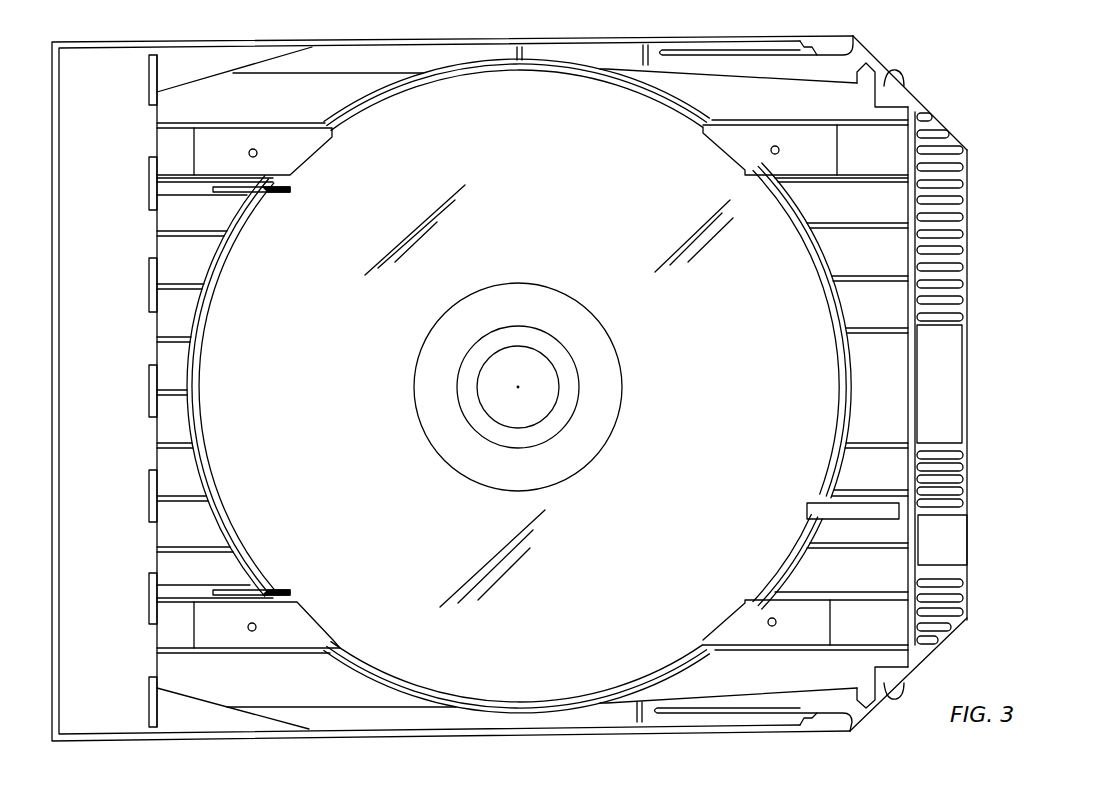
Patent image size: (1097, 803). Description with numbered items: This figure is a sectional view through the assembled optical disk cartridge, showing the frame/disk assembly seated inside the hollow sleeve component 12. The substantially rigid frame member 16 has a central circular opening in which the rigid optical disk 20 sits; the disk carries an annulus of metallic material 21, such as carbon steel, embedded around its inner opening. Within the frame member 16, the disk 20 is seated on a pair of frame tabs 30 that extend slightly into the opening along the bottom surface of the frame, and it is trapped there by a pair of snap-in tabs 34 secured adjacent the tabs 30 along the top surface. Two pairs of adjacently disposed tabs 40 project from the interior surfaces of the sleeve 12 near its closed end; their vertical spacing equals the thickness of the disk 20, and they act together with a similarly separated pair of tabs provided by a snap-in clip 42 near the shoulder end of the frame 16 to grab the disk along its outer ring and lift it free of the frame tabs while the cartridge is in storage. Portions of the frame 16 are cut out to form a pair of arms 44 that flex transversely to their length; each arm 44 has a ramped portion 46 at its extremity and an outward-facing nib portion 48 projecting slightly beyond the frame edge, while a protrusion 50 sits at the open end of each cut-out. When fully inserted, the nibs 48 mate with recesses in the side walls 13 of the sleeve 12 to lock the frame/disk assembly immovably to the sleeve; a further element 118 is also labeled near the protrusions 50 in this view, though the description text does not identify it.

The sleeve component 12 is at (351, 42).
The side walls 13 is at (630, 40).
The frame member 16 is at (861, 363).
The optical disk 20 is at (485, 680).
The annulus of metallic material 21 is at (611, 380).
The frame tabs 30 is at (303, 146).
The snap-in tabs 34 is at (727, 146).
The tabs 40 is at (290, 192).
The snap-in clip 42 is at (804, 504).
The arms 44 is at (712, 54).
The ramped portion 46 is at (853, 36).
The nib portion 48 is at (800, 40).
The protrusions 50 is at (868, 62).
The latch members 118 is at (890, 82).